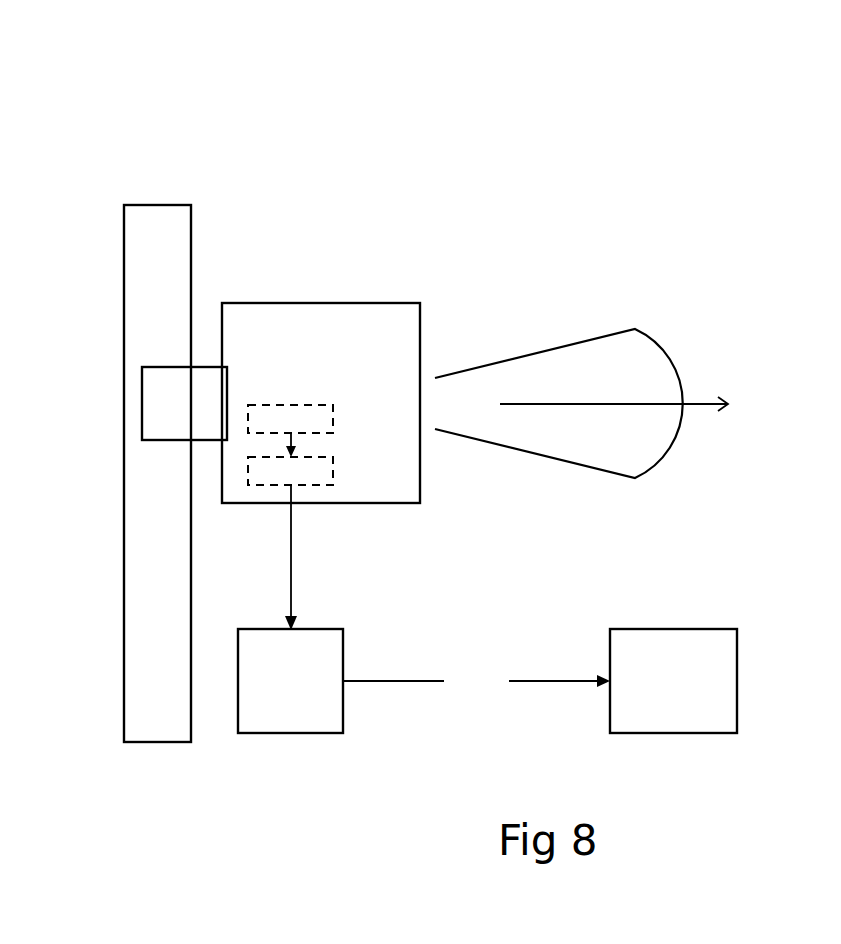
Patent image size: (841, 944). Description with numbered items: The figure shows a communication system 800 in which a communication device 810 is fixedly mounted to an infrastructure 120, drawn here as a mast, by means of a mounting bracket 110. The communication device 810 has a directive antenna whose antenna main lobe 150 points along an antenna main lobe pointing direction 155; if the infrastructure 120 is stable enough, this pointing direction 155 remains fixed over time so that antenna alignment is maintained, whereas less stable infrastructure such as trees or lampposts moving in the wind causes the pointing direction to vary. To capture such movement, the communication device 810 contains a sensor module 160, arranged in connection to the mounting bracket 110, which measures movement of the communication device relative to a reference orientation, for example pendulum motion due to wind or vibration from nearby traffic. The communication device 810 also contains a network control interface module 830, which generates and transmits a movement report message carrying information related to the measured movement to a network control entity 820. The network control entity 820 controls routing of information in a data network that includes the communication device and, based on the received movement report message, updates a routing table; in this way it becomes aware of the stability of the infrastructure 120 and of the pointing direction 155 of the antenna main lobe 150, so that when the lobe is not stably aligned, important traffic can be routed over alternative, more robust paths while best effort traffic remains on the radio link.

The communication system 800 is at (732, 116).
The infrastructure 120 is at (158, 205).
The mounting bracket 110 is at (142, 422).
The communication device 810 is at (320, 503).
The sensor module 160 is at (333, 412).
The network control interface module 830 is at (333, 462).
The network control entity 820 is at (290, 733).
The antenna main lobe 150 is at (664, 318).
The antenna main lobe pointing direction 155 is at (625, 389).